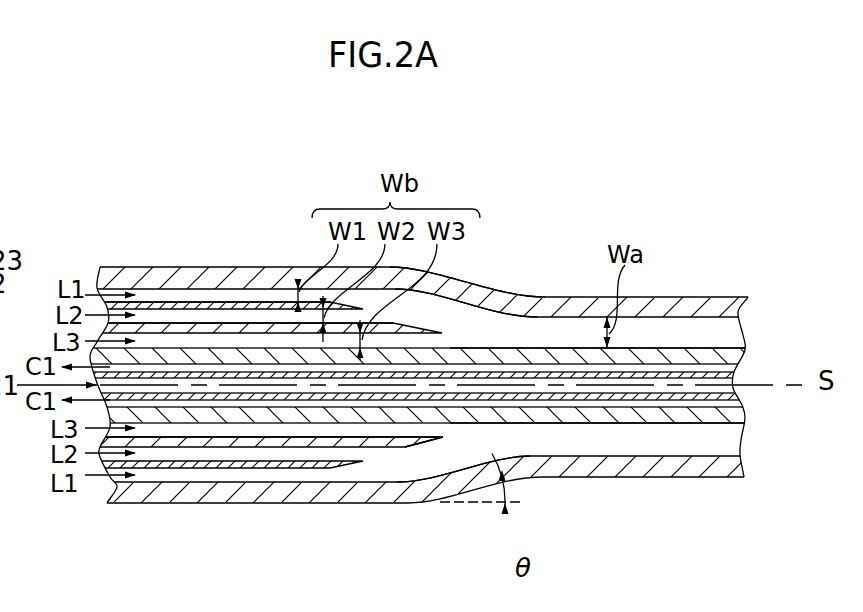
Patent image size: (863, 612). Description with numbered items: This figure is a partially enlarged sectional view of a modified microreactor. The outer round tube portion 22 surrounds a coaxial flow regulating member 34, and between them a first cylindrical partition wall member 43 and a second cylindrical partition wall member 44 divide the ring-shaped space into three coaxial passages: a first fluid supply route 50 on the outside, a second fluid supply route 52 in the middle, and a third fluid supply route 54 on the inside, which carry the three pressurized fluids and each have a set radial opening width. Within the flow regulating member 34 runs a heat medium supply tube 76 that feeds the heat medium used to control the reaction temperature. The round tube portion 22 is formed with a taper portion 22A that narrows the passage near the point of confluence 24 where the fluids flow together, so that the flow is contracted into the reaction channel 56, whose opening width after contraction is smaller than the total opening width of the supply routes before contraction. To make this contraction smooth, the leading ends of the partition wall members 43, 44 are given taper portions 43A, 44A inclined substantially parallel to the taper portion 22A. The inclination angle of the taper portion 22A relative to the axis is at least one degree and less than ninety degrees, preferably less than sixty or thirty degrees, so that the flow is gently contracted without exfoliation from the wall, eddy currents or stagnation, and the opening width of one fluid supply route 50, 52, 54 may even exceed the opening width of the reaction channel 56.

The round tube portion 22 is at (678, 294).
The taper portion 22A is at (510, 490).
The point of confluence 24 is at (452, 307).
The flow regulating member 34 is at (670, 426).
The first cylindrical partition wall member 43 is at (220, 466).
The taper portion of first partition wall member 43A is at (422, 442).
The second cylindrical partition wall member 44 is at (277, 448).
The taper portion of second partition wall member 44A is at (458, 477).
The first fluid supply route 50 is at (197, 294).
The second fluid supply route 52 is at (257, 318).
The third fluid supply route 54 is at (176, 434).
The reaction channel 56 is at (512, 341).
The heat medium supply tube 76 is at (617, 401).